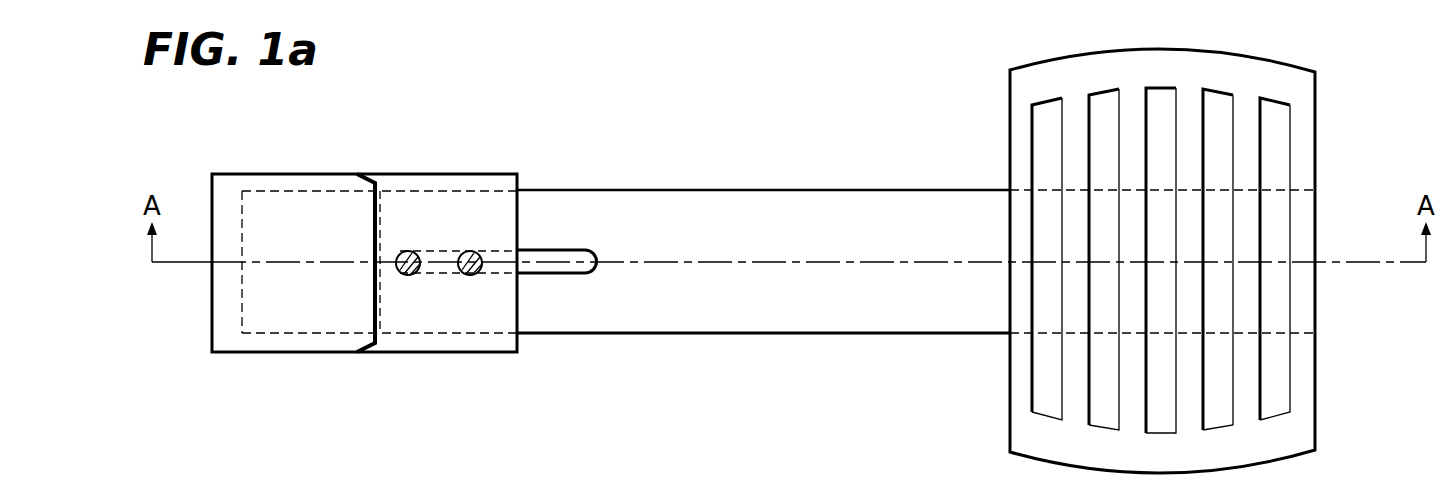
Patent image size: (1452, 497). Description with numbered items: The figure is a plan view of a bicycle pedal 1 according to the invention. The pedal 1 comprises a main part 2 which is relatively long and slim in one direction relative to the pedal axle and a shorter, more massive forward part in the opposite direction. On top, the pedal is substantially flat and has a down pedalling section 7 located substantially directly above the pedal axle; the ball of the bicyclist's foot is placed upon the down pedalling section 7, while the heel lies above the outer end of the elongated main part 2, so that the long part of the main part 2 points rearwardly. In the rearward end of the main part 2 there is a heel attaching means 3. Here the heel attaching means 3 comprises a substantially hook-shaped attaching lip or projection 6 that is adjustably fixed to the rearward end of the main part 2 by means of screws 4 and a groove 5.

The bicycle pedal 1 is at (745, 352).
The main part 2 is at (878, 337).
The heel attaching means 3 is at (320, 352).
The screws 4 is at (411, 251).
The groove 5 is at (570, 276).
The attaching lip 6 is at (314, 230).
The down pedalling section 7 is at (1010, 140).